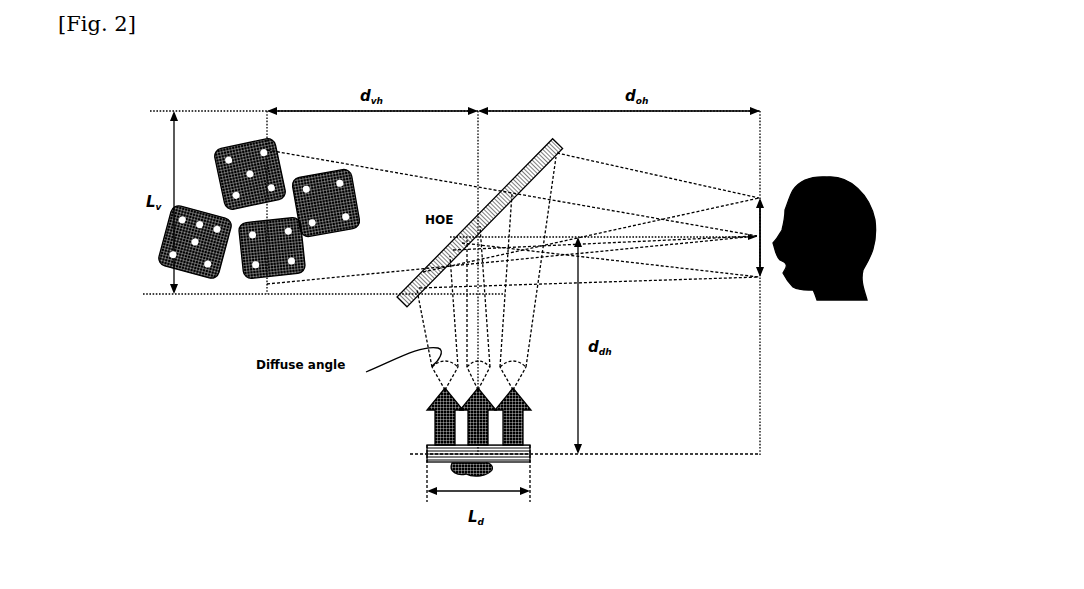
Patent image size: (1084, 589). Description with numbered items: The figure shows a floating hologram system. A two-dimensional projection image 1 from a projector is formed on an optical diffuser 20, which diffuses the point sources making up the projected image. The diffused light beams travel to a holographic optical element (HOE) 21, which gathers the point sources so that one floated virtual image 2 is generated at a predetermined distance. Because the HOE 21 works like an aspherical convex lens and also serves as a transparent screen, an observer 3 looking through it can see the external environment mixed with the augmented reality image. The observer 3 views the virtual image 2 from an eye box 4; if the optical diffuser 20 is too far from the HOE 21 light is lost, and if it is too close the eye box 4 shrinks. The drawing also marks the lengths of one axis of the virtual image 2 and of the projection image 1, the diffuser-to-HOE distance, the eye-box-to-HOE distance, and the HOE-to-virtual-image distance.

The two-dimensional projection image 1 is at (460, 477).
The virtual image 2 is at (153, 240).
The observer 3 is at (833, 178).
The eye box 4 is at (770, 170).
The optical diffuser 20 is at (532, 455).
The holographic optical element (HOE) 21 is at (553, 137).